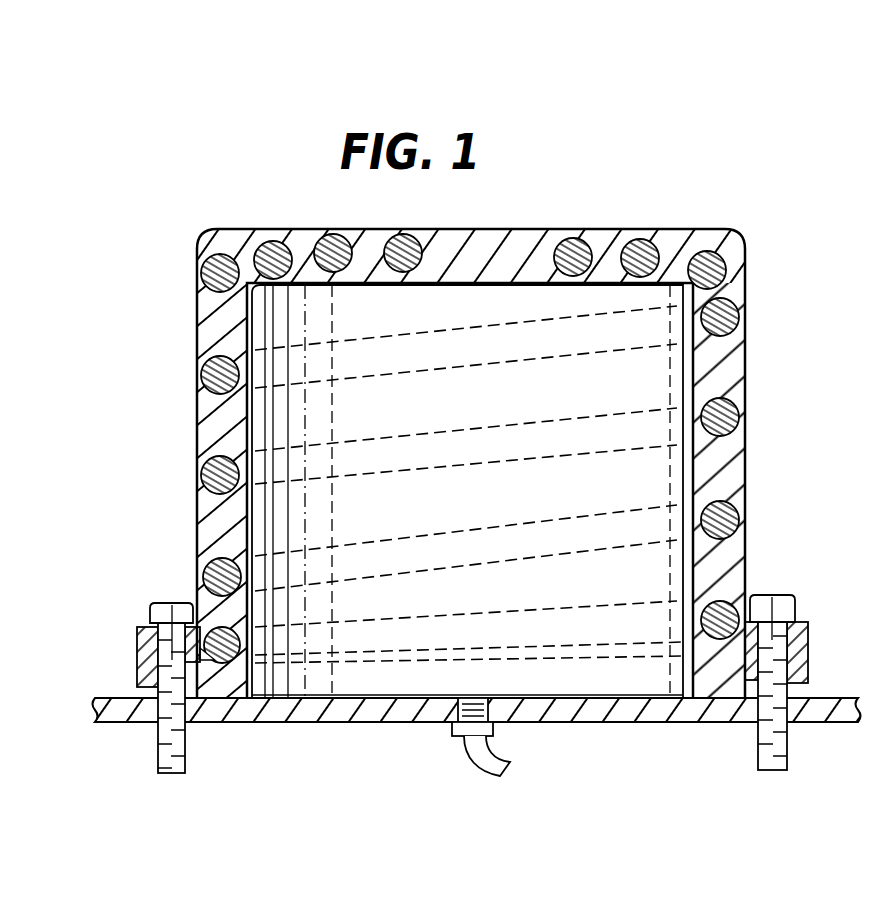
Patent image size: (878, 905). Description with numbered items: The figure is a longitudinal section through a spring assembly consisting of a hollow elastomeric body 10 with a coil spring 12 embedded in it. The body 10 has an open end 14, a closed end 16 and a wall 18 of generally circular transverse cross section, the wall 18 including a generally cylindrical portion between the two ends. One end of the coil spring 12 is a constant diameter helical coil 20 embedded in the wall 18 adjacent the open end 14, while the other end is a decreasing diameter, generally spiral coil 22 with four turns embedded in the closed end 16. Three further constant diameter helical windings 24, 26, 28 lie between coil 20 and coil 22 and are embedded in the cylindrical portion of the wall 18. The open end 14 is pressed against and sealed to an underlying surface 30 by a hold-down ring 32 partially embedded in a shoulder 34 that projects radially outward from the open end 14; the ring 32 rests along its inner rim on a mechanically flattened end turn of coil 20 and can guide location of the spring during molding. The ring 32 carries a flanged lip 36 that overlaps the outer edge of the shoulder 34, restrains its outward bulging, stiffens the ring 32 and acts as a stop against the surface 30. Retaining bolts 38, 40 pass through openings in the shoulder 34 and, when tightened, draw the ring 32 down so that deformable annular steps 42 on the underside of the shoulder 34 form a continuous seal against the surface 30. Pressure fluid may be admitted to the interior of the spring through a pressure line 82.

The hollow elastomeric body 10 is at (188, 314).
The coil spring 12 is at (210, 440).
The open end 14 is at (432, 682).
The closed end 16 is at (497, 243).
The wall 18 is at (725, 450).
The constant diameter helical coil 20 is at (205, 632).
The decreasing diameter spiral coil 22 is at (284, 243).
The helical winding 24 is at (210, 572).
The helical winding 26 is at (208, 478).
The helical winding 28 is at (207, 367).
The underlying surface 30 is at (602, 702).
The hold-down ring 32 is at (803, 624).
The shoulder 34 is at (195, 686).
The flanged lip 36 is at (135, 683).
The retaining bolt 38 is at (788, 756).
The retaining bolt 40 is at (162, 742).
The deformable annular step 42 is at (752, 680).
The pressure line 82 is at (491, 774).